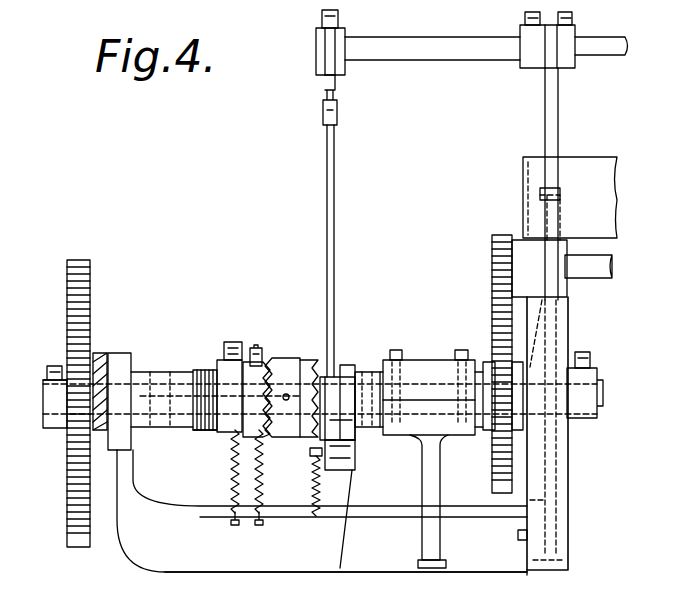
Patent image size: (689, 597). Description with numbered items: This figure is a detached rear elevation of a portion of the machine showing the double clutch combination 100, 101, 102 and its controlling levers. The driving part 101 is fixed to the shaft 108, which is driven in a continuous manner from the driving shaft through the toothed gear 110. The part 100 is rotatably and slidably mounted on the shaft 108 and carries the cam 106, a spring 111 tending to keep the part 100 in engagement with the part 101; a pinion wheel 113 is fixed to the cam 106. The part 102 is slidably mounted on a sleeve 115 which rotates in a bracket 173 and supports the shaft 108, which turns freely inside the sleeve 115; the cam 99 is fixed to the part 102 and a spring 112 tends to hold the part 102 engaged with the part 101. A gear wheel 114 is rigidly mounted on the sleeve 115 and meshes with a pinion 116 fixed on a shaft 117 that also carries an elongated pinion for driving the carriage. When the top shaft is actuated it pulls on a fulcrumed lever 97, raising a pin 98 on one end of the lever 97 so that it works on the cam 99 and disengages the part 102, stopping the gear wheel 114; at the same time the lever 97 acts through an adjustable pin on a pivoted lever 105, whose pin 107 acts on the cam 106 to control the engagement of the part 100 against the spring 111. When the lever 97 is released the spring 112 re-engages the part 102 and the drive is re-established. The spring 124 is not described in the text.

The fulcrumed lever 97 is at (338, 532).
The pin 98 is at (355, 450).
The cam 99 is at (342, 365).
The clutch part 100 is at (258, 345).
The driving clutch part 101 is at (270, 362).
The clutch part 102 is at (318, 345).
The pivoted lever 105 is at (220, 360).
The cam 106 is at (205, 370).
The pin 107 is at (232, 342).
The shaft 108 is at (597, 393).
The toothed gear 110 is at (67, 488).
The spring 111 is at (162, 372).
The spring 112 is at (366, 370).
The pinion wheel 113 is at (205, 430).
The gear wheel 114 is at (492, 320).
The sleeve 115 is at (475, 360).
The pinion 116 is at (492, 236).
The shaft 117 is at (583, 278).
The spring 124 is at (235, 470).
The bracket 173 is at (440, 435).